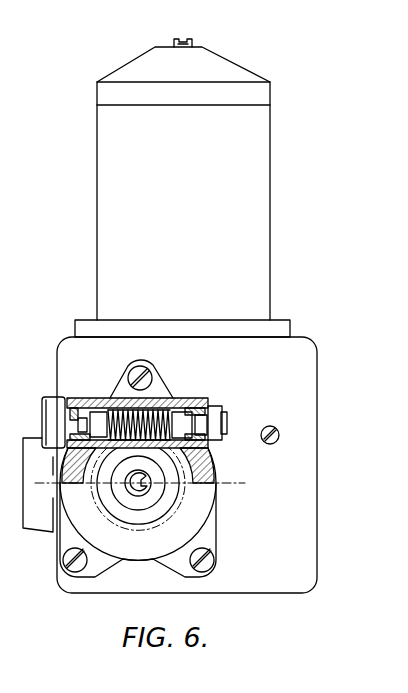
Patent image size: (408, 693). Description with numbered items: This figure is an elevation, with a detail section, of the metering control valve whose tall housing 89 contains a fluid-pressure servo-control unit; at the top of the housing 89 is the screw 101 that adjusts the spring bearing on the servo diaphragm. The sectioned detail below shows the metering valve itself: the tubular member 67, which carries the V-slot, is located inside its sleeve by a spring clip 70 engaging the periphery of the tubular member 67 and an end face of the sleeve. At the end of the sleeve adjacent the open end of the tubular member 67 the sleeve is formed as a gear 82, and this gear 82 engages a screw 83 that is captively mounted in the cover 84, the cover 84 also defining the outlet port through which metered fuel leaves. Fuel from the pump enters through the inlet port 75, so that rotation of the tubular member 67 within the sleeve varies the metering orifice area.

The screw 101 is at (193, 42).
The housing 89 is at (253, 190).
The screw 83 is at (163, 395).
The inlet port 75 is at (32, 448).
The gear 82 is at (172, 474).
The spring clip 70 is at (153, 490).
The tubular member 67 is at (137, 492).
The cover 84 is at (163, 547).